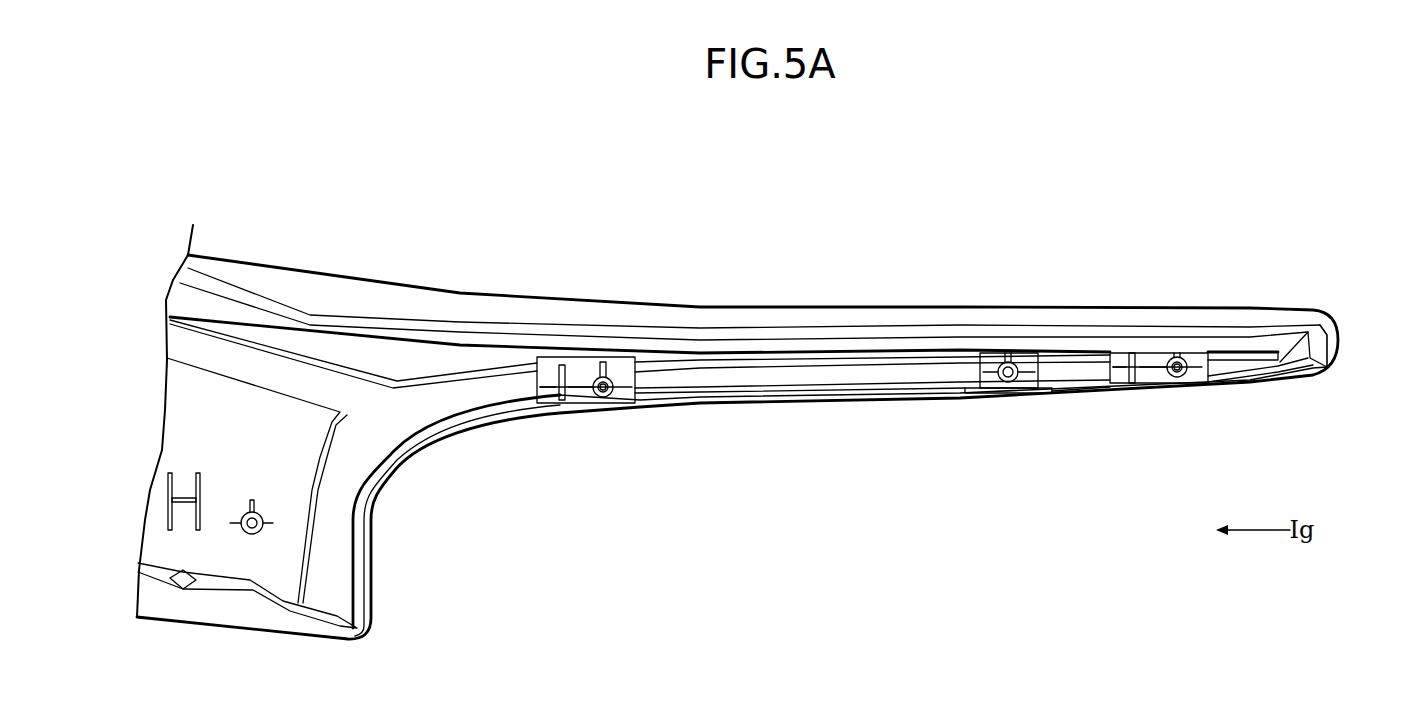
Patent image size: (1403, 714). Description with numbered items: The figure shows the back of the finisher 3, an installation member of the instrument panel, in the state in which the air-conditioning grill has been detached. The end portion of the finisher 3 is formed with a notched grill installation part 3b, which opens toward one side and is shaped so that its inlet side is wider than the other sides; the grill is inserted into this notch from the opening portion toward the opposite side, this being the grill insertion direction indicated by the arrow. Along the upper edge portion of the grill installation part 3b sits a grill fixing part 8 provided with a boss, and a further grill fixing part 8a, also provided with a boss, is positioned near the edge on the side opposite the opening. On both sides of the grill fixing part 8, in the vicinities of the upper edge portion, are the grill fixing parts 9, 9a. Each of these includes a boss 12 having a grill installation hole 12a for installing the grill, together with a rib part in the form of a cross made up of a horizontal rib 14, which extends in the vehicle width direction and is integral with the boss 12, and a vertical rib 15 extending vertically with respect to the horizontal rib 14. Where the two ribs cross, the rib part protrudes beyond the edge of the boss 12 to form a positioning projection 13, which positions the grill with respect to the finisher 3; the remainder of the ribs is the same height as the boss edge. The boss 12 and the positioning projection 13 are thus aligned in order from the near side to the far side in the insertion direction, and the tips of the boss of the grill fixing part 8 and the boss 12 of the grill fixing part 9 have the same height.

The finisher 3 is at (294, 384).
The grill installation part 3b is at (786, 513).
The grill fixing part 8 is at (1008, 385).
The grill fixing part 8a is at (262, 530).
The grill fixing part 9 is at (1105, 236).
The grill fixing part 9a is at (532, 236).
The boss 12 is at (605, 362).
The grill installation hole 12a is at (610, 398).
The positioning projection 13 is at (572, 376).
The horizontal rib 14 is at (548, 391).
The vertical rib 15 is at (562, 402).